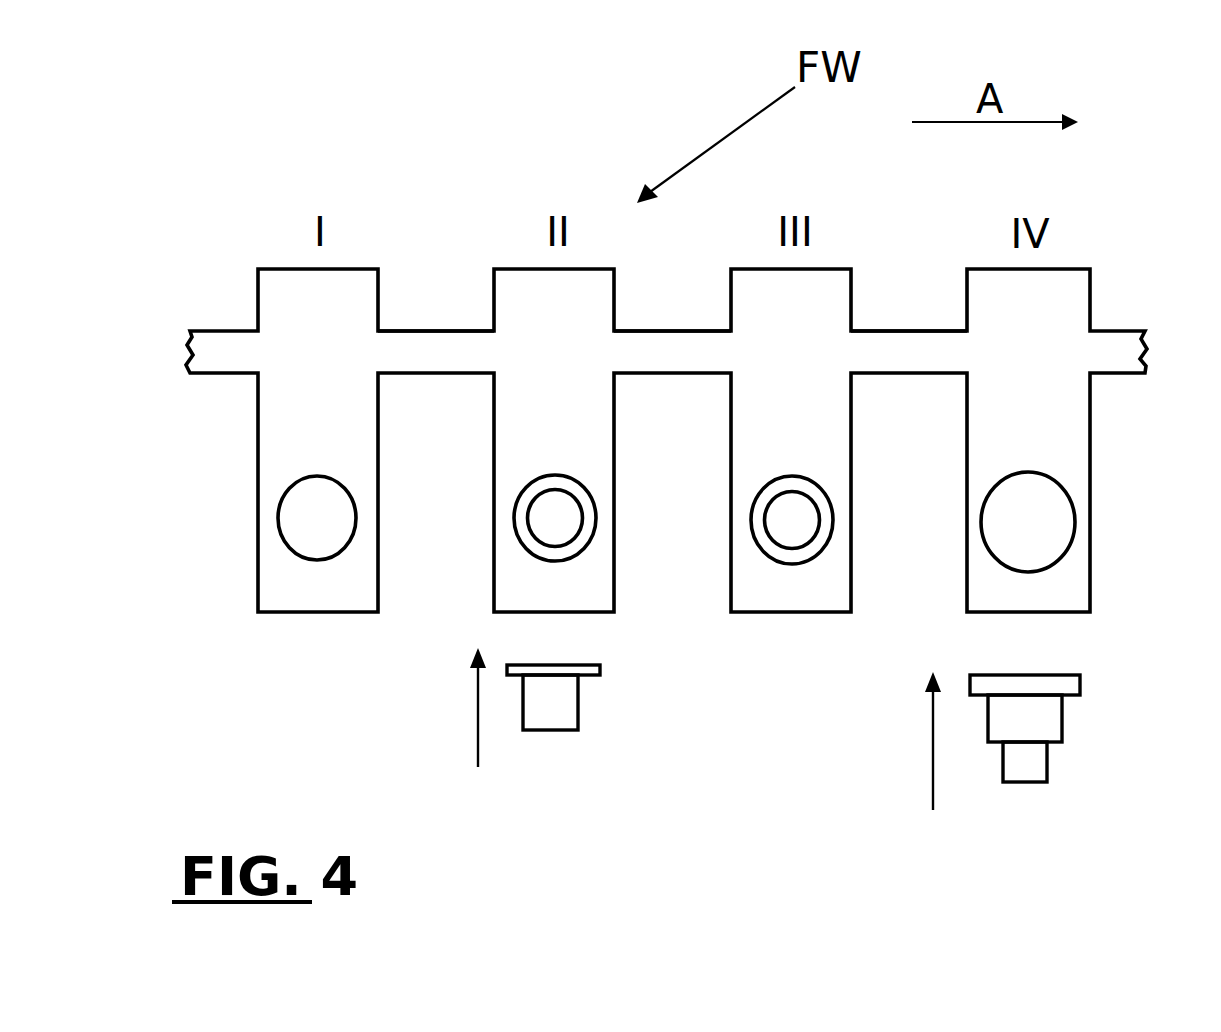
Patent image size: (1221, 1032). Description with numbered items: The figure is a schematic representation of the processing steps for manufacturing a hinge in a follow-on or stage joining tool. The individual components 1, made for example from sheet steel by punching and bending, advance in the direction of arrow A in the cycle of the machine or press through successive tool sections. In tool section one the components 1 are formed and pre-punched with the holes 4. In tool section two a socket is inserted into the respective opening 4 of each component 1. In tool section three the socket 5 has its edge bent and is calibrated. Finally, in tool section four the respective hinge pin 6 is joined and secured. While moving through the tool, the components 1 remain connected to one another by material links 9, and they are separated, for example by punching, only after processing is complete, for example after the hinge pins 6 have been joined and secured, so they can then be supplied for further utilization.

The component 1 is at (988, 587).
The hole 4 is at (333, 518).
The socket 5 is at (592, 470).
The hinge pin 6 is at (1067, 470).
The material link 9 is at (672, 312).